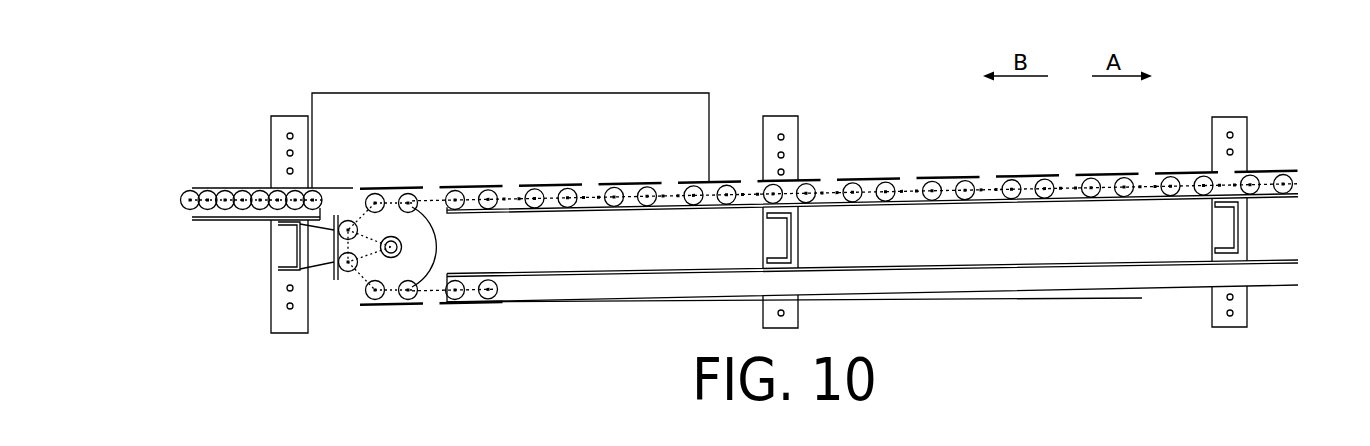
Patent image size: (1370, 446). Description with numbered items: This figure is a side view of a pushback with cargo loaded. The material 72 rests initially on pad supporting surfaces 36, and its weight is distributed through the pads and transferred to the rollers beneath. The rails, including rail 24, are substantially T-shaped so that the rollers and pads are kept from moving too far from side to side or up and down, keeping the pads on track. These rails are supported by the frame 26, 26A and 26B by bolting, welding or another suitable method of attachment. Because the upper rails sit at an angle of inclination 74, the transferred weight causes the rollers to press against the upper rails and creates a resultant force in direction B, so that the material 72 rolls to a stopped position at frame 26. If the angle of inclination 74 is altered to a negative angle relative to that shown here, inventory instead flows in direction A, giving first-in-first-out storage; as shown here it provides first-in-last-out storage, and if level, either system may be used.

The frame 26 is at (284, 100).
The frame 26A is at (779, 100).
The frame 26B is at (1229, 92).
The material 72 is at (437, 110).
The pad supporting surface 36 is at (866, 175).
The rail 24 is at (891, 292).
The angle of inclination 74 is at (1089, 274).